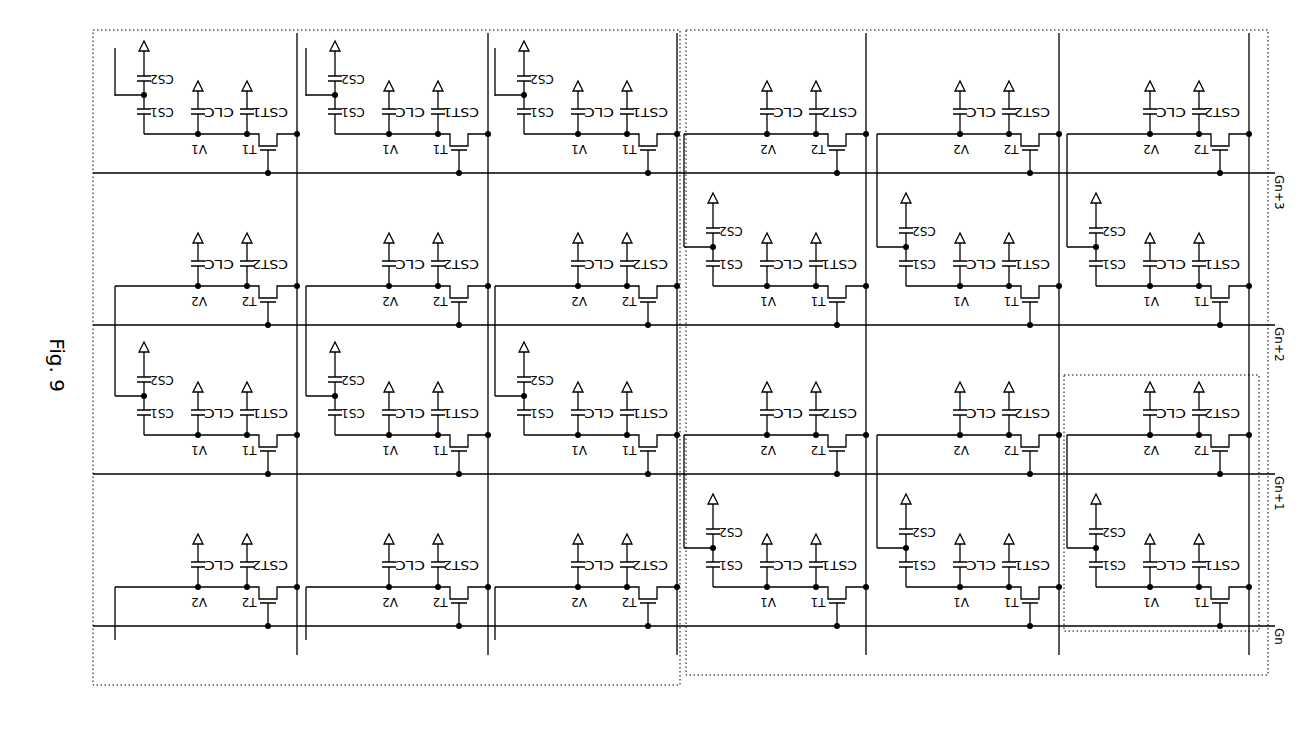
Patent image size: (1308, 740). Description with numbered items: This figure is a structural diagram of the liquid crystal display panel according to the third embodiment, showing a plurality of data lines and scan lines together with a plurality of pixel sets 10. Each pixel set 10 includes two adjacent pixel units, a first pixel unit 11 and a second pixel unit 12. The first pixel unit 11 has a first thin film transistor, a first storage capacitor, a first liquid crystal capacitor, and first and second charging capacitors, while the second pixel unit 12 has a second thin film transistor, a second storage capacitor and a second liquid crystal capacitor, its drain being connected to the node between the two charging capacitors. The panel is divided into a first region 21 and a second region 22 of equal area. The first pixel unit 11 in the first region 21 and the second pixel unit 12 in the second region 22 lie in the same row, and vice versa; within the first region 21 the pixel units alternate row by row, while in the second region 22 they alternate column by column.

The pixel set 10 is at (1179, 503).
The first pixel unit 11 is at (1251, 538).
The second pixel unit 12 is at (1259, 436).
The first region 21 is at (989, 366).
The second region 22 is at (383, 686).